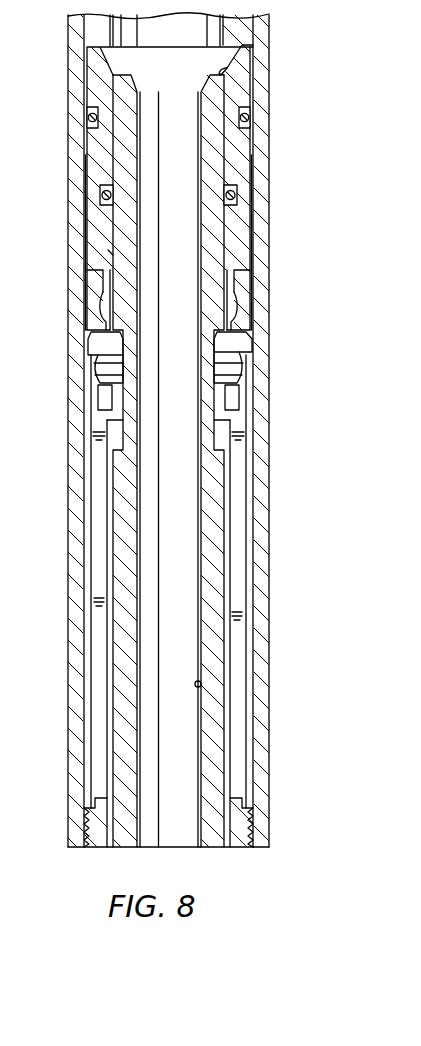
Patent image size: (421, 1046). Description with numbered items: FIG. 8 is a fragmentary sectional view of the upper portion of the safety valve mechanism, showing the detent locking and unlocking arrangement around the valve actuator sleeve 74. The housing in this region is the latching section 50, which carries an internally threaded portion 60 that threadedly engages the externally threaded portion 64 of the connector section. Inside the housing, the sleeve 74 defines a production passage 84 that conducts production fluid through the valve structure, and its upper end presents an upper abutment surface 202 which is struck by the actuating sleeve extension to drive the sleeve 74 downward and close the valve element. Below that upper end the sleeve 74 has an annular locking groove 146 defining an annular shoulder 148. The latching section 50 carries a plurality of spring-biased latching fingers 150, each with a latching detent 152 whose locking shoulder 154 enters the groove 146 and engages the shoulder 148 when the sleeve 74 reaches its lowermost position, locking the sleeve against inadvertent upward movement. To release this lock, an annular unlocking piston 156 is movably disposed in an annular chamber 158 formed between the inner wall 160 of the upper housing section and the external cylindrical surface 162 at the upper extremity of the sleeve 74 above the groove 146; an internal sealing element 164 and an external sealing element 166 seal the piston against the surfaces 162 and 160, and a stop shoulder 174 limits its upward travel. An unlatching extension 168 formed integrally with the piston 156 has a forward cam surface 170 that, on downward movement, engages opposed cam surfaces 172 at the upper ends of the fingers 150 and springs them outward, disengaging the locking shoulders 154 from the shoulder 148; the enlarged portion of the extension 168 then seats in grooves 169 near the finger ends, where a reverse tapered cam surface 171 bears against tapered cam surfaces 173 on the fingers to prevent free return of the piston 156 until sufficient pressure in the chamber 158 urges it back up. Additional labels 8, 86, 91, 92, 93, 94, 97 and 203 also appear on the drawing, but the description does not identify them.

The tool 8 is at (7, 597).
The latching section 50 is at (70, 652).
The internally threaded portion 60 is at (83, 823).
The externally threaded portion 64 is at (241, 827).
The valve actuator sleeve 74 is at (216, 528).
The production passage 84 is at (201, 685).
The annular chamber 86 is at (12, 490).
The passage 91 is at (10, 523).
The passage 92 is at (9, 376).
The passage 93 is at (11, 555).
The passage 94 is at (11, 630).
The passage 97 is at (8, 411).
The annular locking groove 146 is at (216, 352).
The annular shoulder 148 is at (100, 388).
The latching fingers 150 is at (102, 693).
The latching detents 152 is at (228, 428).
The locking shoulders 154 is at (229, 462).
The annular unlocking piston 156 is at (240, 142).
The annular chamber 158 is at (245, 277).
The inner wall 160 is at (87, 233).
The external cylindrical surface 162 is at (110, 253).
The internal sealing element 164 is at (100, 195).
The external sealing element 166 is at (127, 115).
The unlatching extension 168 is at (234, 306).
The grooves 169 is at (100, 400).
The forward cam surface 170 is at (231, 323).
The reverse tapered cam surface 171 is at (236, 298).
The cam surfaces 172 is at (103, 362).
The tapered cam surfaces 173 is at (236, 390).
The stop shoulder 174 is at (86, 47).
The upper abutment surface 202 is at (223, 72).
The chamber 203 is at (12, 440).